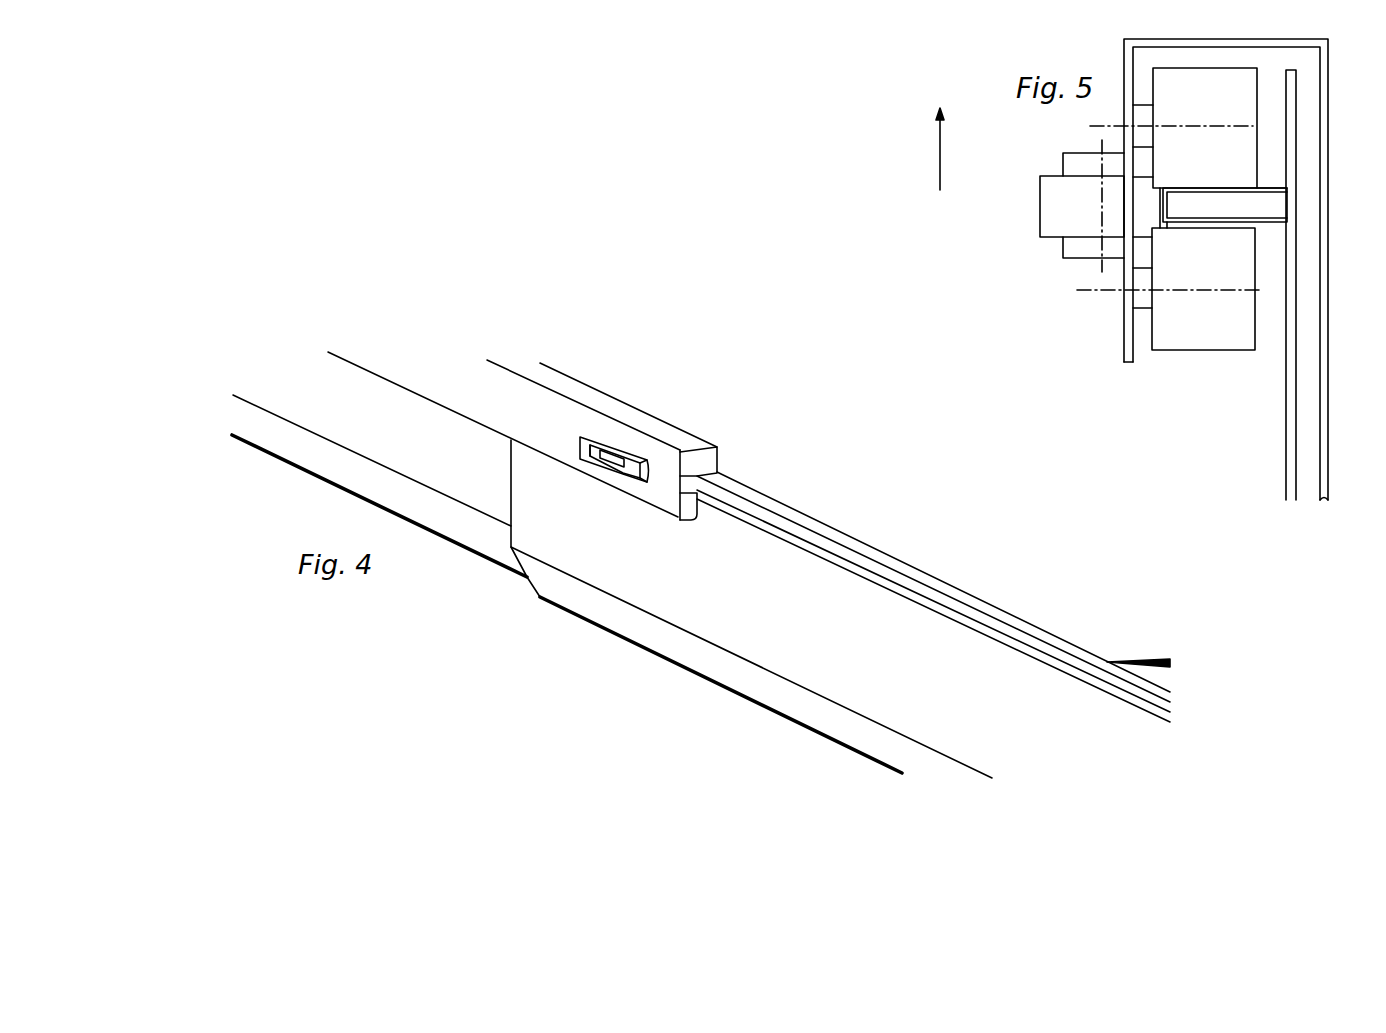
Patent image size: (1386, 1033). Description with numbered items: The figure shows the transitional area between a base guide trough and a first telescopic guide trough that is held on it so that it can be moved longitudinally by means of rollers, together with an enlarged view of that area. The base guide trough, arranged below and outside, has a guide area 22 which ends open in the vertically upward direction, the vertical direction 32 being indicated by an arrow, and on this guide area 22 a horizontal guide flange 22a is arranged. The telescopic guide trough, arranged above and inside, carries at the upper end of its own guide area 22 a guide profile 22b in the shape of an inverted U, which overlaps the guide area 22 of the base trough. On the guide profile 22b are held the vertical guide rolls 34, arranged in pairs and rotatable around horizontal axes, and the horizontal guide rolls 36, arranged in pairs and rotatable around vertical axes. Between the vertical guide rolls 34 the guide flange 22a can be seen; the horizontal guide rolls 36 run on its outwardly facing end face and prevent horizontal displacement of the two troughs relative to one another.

In FIG. 4, the guide area 22 is at (471, 467).
In FIG. 5, the guide area 22 is at (1287, 450).
In FIG. 4, the guide flange 22a is at (807, 540).
In FIG. 5, the guide flange 22a is at (1253, 207).
In FIG. 4, the guide profile 22b is at (651, 424).
In FIG. 5, the guide profile 22b is at (1230, 45).
In FIG. 5, the vertical direction 32 is at (940, 152).
In FIG. 4, the vertical guide rolls 34 is at (697, 463).
In FIG. 5, the vertical guide rolls 34 is at (1200, 80).
In FIG. 4, the horizontal guide rolls 36 is at (627, 473).
In FIG. 5, the horizontal guide rolls 36 is at (1045, 222).